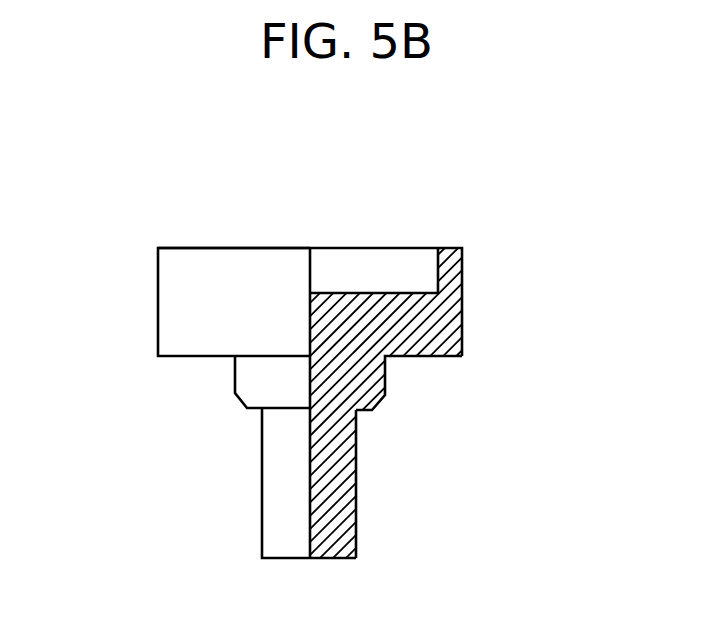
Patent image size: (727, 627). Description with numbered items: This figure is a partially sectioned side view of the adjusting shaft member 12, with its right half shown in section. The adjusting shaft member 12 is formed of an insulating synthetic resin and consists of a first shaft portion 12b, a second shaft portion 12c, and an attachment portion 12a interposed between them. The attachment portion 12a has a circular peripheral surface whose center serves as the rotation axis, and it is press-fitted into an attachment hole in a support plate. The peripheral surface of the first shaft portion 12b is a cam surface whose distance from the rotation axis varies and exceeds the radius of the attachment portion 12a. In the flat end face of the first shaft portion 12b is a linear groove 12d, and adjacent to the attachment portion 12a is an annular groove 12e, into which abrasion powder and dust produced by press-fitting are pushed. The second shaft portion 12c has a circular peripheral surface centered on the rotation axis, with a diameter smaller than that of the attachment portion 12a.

The adjusting shaft member 12 is at (509, 247).
The attachment portion 12a is at (252, 382).
The first shaft portion 12b is at (183, 295).
The second shaft portion 12c is at (276, 493).
The linear groove 12d is at (380, 272).
The annular groove 12e is at (400, 357).